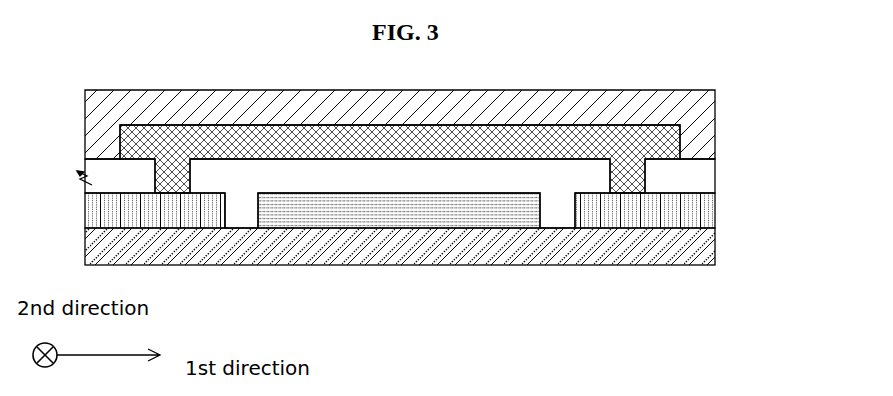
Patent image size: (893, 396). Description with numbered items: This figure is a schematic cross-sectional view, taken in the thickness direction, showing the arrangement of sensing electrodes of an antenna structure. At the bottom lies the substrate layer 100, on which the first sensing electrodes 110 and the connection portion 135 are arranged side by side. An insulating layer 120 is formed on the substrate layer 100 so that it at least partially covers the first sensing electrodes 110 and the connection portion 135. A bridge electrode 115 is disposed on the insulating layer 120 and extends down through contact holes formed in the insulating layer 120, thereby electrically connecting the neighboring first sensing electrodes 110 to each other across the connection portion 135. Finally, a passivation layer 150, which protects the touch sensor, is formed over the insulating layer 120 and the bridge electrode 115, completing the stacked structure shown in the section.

The substrate layer 100 is at (715, 247).
The first sensing electrodes 110 is at (715, 207).
The bridge electrode 115 is at (680, 133).
The insulating layer 120 is at (705, 174).
The connection portion 135 is at (400, 208).
The passivation layer 150 is at (715, 96).